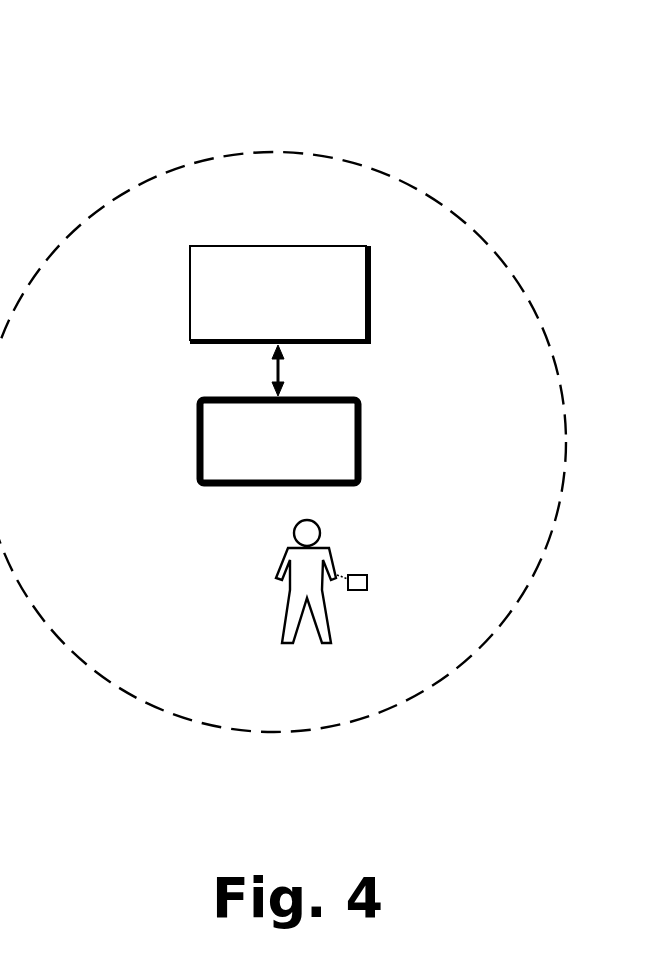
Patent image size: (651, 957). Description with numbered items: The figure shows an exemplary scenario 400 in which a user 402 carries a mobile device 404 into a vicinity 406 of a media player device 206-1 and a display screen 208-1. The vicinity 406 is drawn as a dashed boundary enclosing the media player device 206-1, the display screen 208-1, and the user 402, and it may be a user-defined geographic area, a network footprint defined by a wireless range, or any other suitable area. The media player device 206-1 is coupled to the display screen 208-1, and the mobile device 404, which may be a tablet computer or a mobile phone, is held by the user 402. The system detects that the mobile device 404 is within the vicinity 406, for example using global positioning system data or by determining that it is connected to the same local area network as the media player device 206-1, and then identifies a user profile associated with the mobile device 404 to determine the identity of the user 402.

The exemplary scenario 400 is at (133, 111).
The vicinity 406 is at (540, 307).
The media player device 206-1 is at (279, 294).
The display screen 208-1 is at (279, 441).
The user 402 is at (327, 548).
The mobile device 404 is at (367, 580).